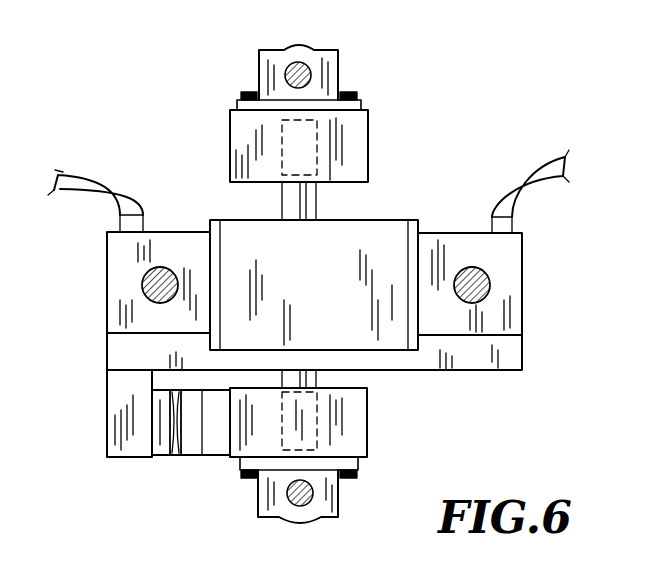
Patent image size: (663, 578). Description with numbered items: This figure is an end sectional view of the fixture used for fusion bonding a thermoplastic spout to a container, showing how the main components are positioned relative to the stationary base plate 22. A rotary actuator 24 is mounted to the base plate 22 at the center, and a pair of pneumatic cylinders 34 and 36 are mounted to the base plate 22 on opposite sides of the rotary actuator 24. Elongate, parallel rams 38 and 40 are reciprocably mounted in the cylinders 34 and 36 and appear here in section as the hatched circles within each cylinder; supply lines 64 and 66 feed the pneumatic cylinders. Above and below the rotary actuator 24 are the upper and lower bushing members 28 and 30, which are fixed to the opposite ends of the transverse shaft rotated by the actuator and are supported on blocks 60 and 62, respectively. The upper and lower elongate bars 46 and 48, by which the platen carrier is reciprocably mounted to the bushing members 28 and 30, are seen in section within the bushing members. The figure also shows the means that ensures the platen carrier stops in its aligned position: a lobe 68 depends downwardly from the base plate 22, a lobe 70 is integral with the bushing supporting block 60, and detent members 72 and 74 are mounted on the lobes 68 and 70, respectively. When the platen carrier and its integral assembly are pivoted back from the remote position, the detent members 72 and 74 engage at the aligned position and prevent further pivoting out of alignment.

The base plate 22 is at (502, 360).
The rotary actuator 24 is at (390, 235).
The upper bushing member 28 is at (328, 62).
The lower bushing member 30 is at (330, 498).
The pneumatic cylinder 34 is at (123, 248).
The pneumatic cylinder 36 is at (510, 255).
The ram 38 is at (143, 285).
The ram 40 is at (480, 285).
The upper elongate bar 46 is at (292, 66).
The lower elongate bar 48 is at (303, 507).
The block 60 is at (243, 144).
The block 62 is at (352, 430).
The supply line 64 is at (90, 176).
The supply line 66 is at (537, 175).
The lobe 68 is at (120, 405).
The lobe 70 is at (217, 447).
The detent member 72 is at (162, 447).
The detent member 74 is at (192, 447).